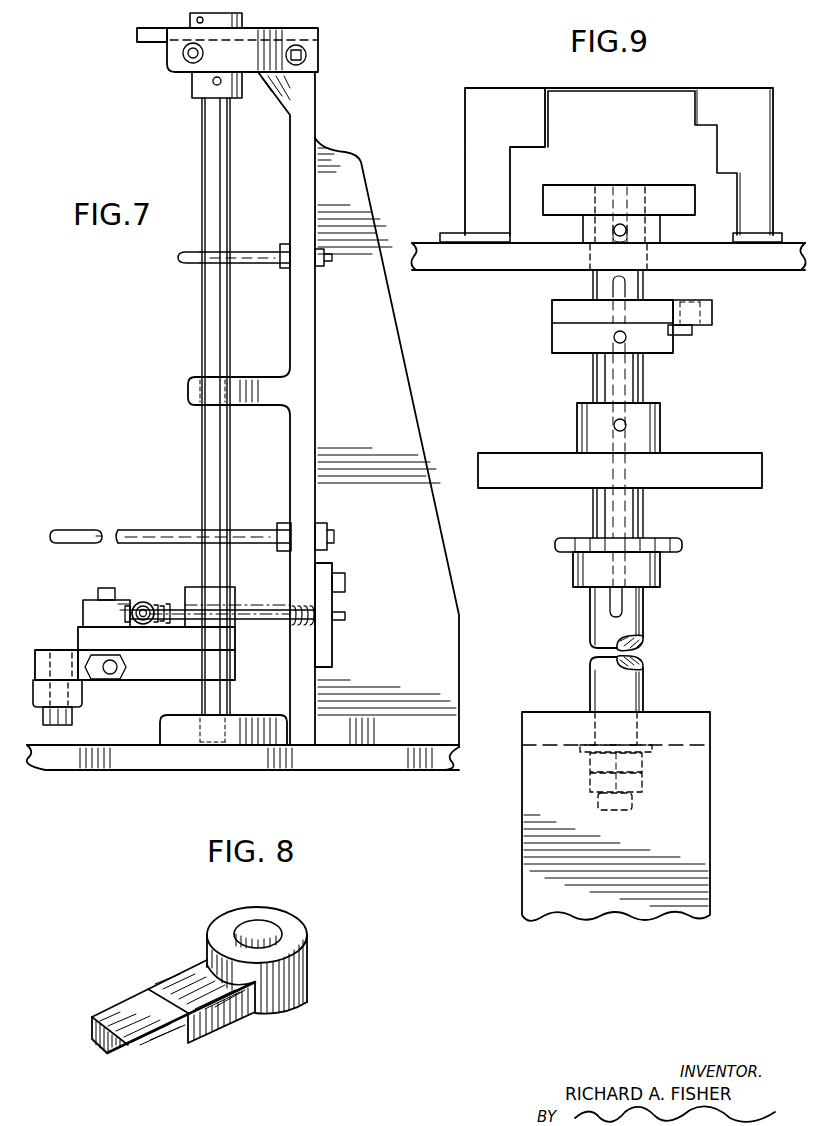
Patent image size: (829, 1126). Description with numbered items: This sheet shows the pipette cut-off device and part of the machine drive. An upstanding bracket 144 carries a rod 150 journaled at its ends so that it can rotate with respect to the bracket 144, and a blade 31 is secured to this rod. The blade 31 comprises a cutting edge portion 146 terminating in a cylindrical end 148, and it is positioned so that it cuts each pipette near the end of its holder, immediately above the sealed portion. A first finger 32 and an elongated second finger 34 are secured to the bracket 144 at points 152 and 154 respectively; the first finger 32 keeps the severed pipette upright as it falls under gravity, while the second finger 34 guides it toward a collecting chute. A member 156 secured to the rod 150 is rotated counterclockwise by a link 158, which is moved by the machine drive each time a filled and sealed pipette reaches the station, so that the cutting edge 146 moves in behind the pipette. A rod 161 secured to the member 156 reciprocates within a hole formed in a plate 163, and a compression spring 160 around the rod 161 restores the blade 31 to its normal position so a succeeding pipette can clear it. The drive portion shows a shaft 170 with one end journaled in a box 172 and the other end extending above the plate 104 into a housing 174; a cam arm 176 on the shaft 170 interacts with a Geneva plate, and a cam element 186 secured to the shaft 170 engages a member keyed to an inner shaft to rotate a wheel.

In FIG. 7, the blade 31 is at (137, 35).
In FIG. 8, the blade 31 is at (230, 996).
In FIG. 7, the first finger 32 is at (250, 252).
In FIG. 7, the second finger 34 is at (92, 506).
In FIG. 9, the plate 104 is at (490, 258).
In FIG. 7, the bracket 144 is at (378, 400).
In FIG. 8, the cutting edge portion 146 is at (150, 1035).
In FIG. 8, the cylindrical end 148 is at (290, 925).
In FIG. 7, the rod 150 is at (202, 160).
In FIG. 7, the point 152 is at (330, 258).
In FIG. 7, the point 154 is at (320, 530).
In FIG. 7, the member 156 is at (165, 674).
In FIG. 7, the link 158 is at (45, 695).
In FIG. 7, the compression spring 160 is at (160, 605).
In FIG. 7, the rod 161 is at (258, 620).
In FIG. 7, the plate 163 is at (322, 640).
In FIG. 9, the shaft 170 is at (600, 625).
In FIG. 9, the box 172 is at (532, 787).
In FIG. 9, the housing 174 is at (476, 138).
In FIG. 9, the cam arm 176 is at (558, 336).
In FIG. 9, the cam element 186 is at (522, 466).